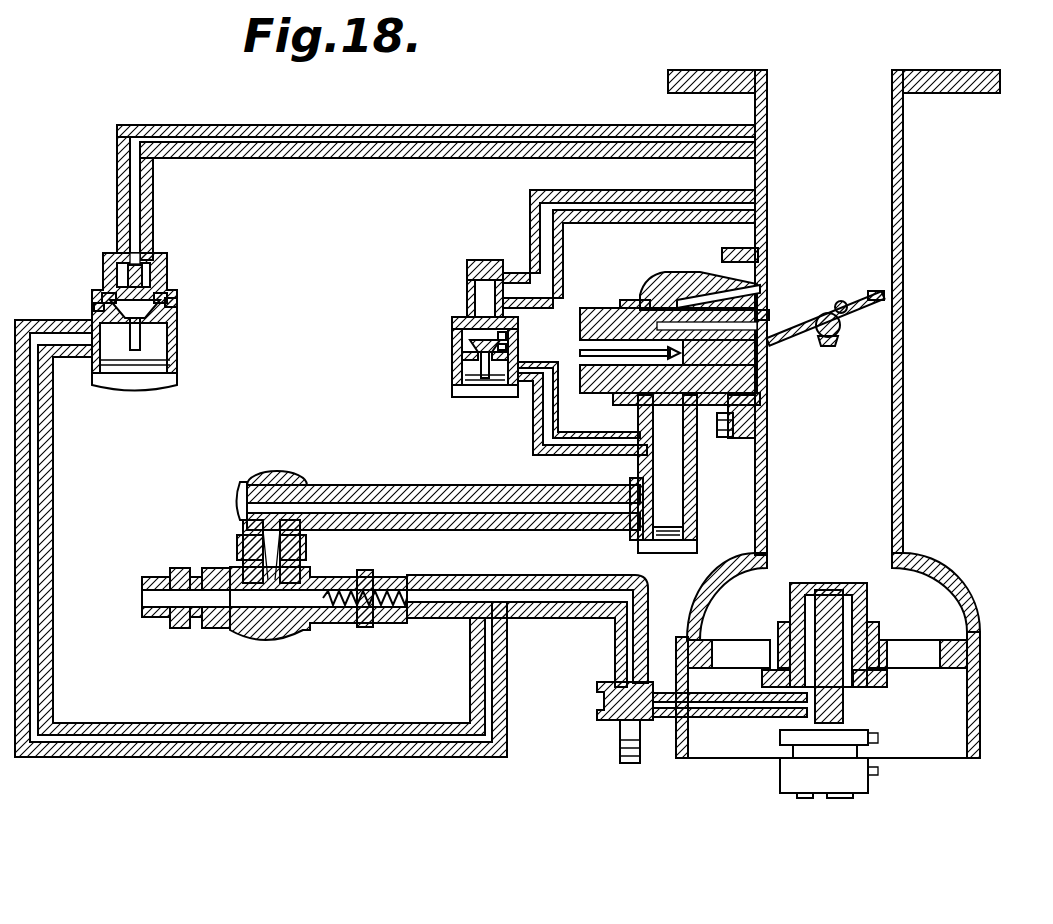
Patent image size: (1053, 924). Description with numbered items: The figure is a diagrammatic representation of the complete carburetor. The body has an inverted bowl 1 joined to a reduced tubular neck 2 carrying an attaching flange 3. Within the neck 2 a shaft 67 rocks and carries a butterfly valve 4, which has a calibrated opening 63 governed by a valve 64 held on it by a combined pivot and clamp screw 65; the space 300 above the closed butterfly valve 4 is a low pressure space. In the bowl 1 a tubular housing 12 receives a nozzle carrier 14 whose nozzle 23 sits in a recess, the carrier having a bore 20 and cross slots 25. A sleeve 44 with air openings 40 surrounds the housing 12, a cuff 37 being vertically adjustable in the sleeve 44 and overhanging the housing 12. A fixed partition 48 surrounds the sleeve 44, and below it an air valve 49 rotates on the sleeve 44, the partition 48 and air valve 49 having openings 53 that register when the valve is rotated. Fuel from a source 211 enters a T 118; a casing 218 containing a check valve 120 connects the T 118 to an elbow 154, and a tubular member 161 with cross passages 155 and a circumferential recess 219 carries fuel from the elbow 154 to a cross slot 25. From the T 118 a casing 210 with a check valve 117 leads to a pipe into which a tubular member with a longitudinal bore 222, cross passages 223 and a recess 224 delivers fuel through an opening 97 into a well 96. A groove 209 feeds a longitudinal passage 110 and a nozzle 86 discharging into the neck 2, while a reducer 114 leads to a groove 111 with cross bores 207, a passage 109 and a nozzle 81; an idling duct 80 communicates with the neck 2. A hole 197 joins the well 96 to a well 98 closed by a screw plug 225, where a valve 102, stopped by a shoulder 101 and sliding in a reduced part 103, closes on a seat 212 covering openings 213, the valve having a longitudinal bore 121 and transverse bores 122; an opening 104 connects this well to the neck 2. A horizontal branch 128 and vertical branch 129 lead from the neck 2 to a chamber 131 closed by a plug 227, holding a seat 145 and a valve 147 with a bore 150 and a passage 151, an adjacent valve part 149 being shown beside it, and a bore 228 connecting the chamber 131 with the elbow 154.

The inverted bowl 1 is at (963, 758).
The reduced tubular neck 2 is at (905, 420).
The attaching flange 3 is at (668, 70).
The butterfly valve 4 is at (800, 326).
The tubular housing 12 is at (798, 583).
The nozzle carrier 14 is at (805, 645).
The bore 20 is at (852, 700).
The nozzle 23 is at (825, 585).
The cross slots 25 is at (740, 720).
The cuff 37 is at (882, 600).
The openings 40 is at (762, 680).
The sleeve 44 is at (778, 625).
The partition 48 is at (880, 648).
The air valve 49 is at (975, 670).
The openings 53 is at (912, 655).
The calibrated opening 63 is at (842, 325).
The valve 64 is at (870, 291).
The combined pivot and clamp screw 65 is at (840, 300).
The shaft 67 is at (828, 340).
The idling adjustable duct 80 is at (705, 290).
The nozzle 81 is at (770, 318).
The nozzle 86 is at (765, 370).
The well 96 is at (672, 500).
The opening 97 is at (640, 527).
The well 98 is at (462, 378).
The shoulder 101 is at (460, 328).
The valve 102 is at (506, 332).
The reduced upper portion of well 103 is at (485, 283).
The opening 104 is at (548, 235).
The longitudinal passage 109 is at (760, 350).
The longitudinal passage 110 is at (712, 400).
The external circumferential groove 111 is at (645, 305).
The reducer 114 is at (665, 353).
The check valve 117 is at (300, 555).
The T 118 is at (265, 632).
The check valve 120 is at (325, 602).
The longitudinal bore 121 is at (470, 300).
The transverse bores 122 is at (455, 335).
The horizontal branch 128 is at (330, 140).
The vertical depending branch 129 is at (135, 207).
The chamber 131 is at (162, 293).
The seat 145 is at (177, 345).
The downwardly closing valve 147 is at (177, 302).
The valve seat 149 is at (108, 296).
The longitudinal bore 150 is at (132, 285).
The transverse passage 151 is at (94, 305).
The elbow 154 is at (500, 578).
The cross passages 155 is at (607, 705).
The tubular member 161 is at (688, 745).
The hole 197 is at (540, 445).
The cross bores 207 is at (663, 285).
The external circumferential groove 209 is at (640, 400).
The casing 210 is at (237, 547).
The source of liquid fuel supply 211 is at (150, 612).
The seat 212 is at (506, 348).
The openings 213 is at (462, 360).
The casing 218 is at (365, 630).
The external circumferential recess 219 is at (625, 690).
The longitudinal bore 222 is at (345, 500).
The cross passages 223 is at (285, 478).
The external circumferential recess 224 is at (270, 475).
The screw plug 225 is at (470, 400).
The removable screw plug 227 is at (128, 378).
The bore 228 is at (45, 470).
The space 300 is at (825, 105).